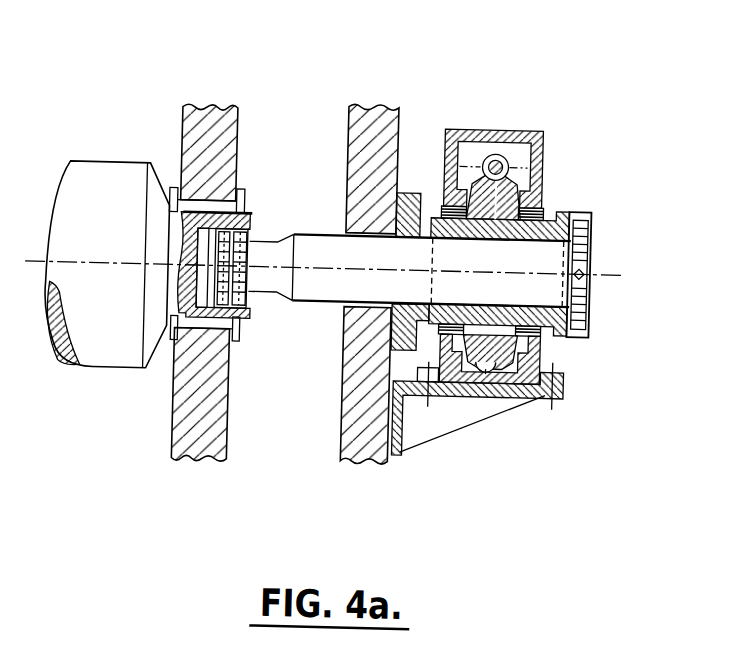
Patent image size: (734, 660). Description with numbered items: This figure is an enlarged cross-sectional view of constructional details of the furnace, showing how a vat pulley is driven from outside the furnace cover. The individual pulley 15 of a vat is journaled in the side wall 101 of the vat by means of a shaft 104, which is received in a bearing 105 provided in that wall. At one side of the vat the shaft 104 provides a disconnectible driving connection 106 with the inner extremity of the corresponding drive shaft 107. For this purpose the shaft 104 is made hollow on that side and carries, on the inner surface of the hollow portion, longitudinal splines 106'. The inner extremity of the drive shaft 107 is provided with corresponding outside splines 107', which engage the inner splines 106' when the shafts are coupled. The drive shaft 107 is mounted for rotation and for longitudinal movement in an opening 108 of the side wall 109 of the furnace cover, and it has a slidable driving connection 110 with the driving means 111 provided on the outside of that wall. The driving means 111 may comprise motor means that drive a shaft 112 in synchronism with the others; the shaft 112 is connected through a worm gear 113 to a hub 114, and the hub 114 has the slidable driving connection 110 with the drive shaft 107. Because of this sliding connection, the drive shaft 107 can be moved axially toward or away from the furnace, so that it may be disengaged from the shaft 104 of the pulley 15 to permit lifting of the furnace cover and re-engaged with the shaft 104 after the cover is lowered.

The pulley 15 is at (85, 169).
The side wall 101 is at (192, 448).
The shaft 104 is at (179, 256).
The bearing 105 is at (200, 289).
The disconnectible driving connection 106 is at (242, 299).
The longitudinal spline 106' is at (185, 373).
The drive shaft 107 is at (410, 246).
The outside spline 107' is at (232, 180).
The opening 108 is at (341, 405).
The side wall 109 is at (378, 107).
The slidable driving connection 110 is at (589, 238).
The driving means 111 is at (462, 152).
The shaft 112 is at (492, 157).
The worm gear 113 is at (499, 350).
The hub 114 is at (464, 354).